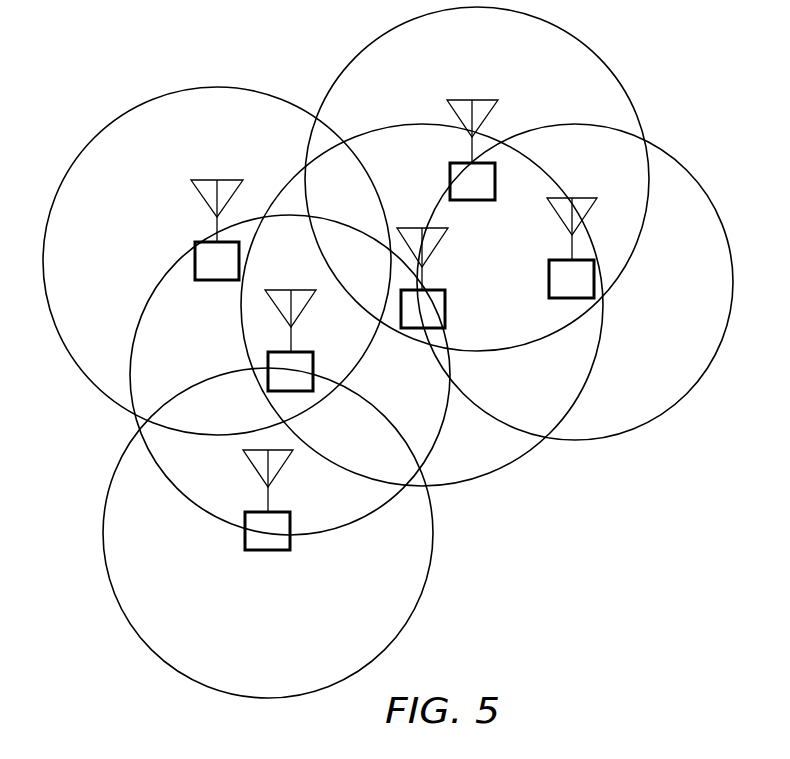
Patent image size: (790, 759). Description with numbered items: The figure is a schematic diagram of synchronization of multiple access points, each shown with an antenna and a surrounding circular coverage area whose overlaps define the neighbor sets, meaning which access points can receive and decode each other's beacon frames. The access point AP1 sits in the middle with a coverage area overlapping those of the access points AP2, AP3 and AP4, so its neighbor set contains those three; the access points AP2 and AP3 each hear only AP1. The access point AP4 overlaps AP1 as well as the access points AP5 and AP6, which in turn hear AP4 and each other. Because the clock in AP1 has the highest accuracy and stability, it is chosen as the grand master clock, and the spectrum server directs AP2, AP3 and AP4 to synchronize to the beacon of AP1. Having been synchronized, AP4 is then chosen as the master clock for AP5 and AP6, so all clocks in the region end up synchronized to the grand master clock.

The access point 1 AP1 is at (290, 375).
The access point 2 AP2 is at (217, 261).
The access point 3 AP3 is at (268, 533).
The access point 4 AP4 is at (422, 305).
The access point 5 AP5 is at (477, 179).
The access point 6 AP6 is at (575, 282).